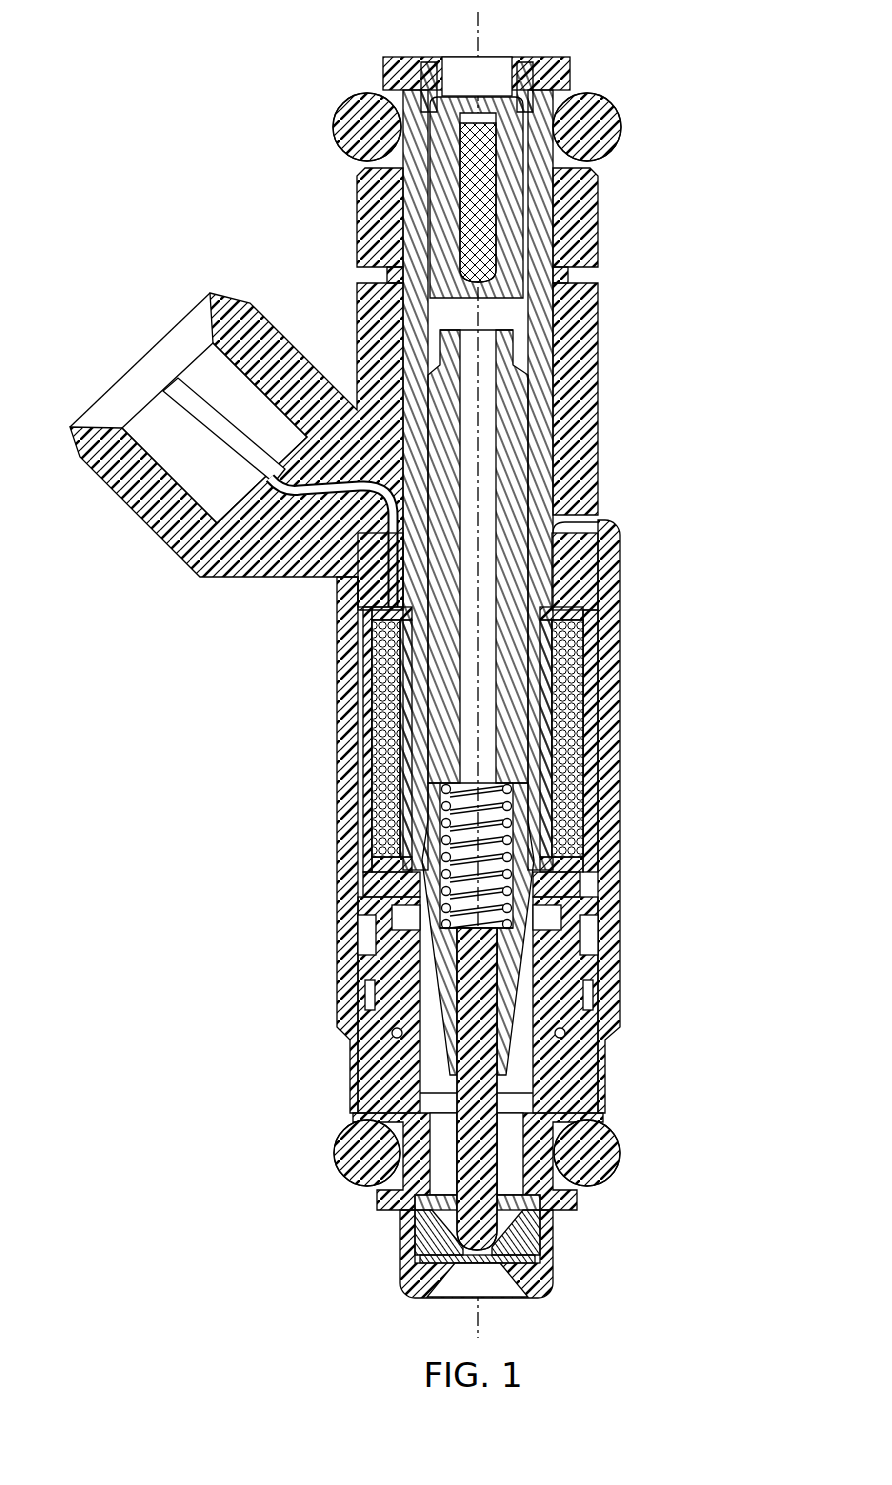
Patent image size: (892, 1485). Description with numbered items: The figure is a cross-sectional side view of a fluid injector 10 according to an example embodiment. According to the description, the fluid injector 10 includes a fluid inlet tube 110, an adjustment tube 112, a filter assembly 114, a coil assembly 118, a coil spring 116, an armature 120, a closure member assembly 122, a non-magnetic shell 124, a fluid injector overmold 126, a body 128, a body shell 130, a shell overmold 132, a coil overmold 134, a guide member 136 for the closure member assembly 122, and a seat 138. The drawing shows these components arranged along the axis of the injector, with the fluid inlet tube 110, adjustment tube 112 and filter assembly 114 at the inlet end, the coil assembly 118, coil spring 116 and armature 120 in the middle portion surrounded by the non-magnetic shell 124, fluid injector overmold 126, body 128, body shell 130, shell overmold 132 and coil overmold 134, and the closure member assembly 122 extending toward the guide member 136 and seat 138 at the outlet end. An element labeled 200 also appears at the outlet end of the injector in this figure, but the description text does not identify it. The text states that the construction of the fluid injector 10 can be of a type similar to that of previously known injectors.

The fluid injector 10 is at (150, 58).
The fluid inlet tube 110 is at (395, 232).
The adjustment tube 112 is at (445, 350).
The filter assembly 114 is at (540, 209).
The coil spring 116 is at (443, 800).
The coil assembly 118 is at (372, 735).
The armature 120 is at (380, 905).
The closure member assembly 122 is at (441, 1068).
The non-magnetic shell 124 is at (595, 887).
The fluid injector overmold 126 is at (608, 737).
The body 128 is at (553, 993).
The body shell 130 is at (596, 927).
The shell overmold 132 is at (590, 965).
The coil overmold 134 is at (590, 672).
The guide member 136 is at (540, 1207).
The seat 138 is at (532, 1229).
The orifice plate 200 is at (524, 1264).